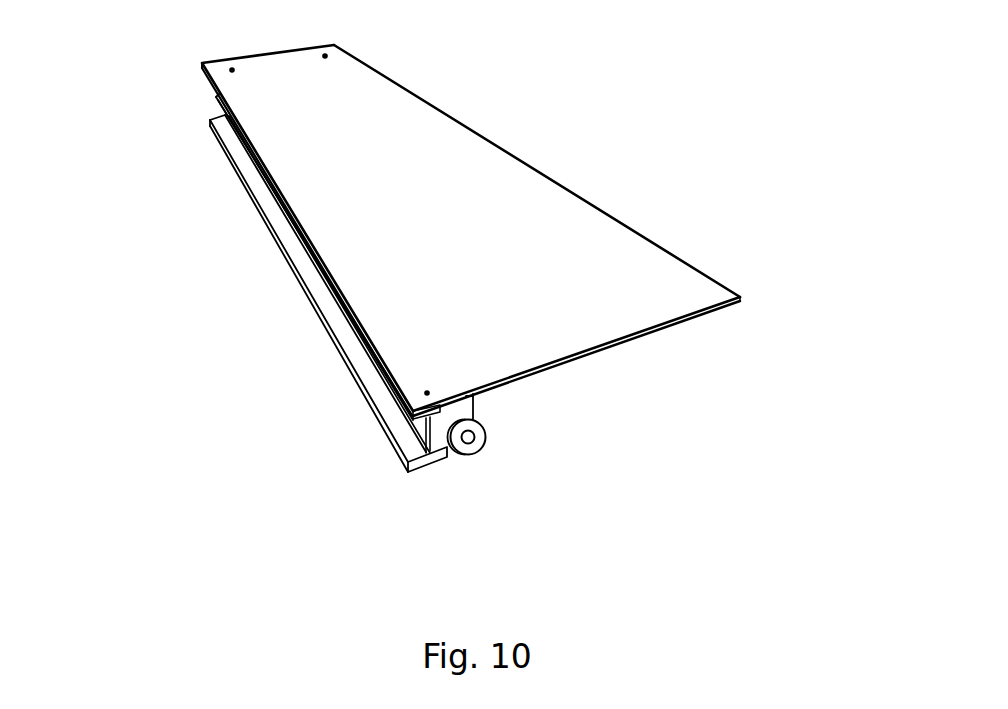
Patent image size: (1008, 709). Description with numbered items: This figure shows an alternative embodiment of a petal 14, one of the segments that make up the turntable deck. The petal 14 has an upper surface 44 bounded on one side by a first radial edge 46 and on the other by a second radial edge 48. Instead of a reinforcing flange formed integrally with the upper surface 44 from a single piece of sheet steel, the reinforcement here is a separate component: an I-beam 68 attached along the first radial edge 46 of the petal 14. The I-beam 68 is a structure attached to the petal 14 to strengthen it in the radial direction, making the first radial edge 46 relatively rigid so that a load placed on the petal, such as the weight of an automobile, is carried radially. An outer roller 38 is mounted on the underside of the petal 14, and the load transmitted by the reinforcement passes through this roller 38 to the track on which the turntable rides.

The upper surface 44 is at (486, 223).
The second radial edge 48 is at (662, 245).
The petal 14 is at (635, 337).
The first radial edge 46 is at (337, 293).
The I-beam 68 is at (333, 347).
The outer roller 38 is at (480, 445).